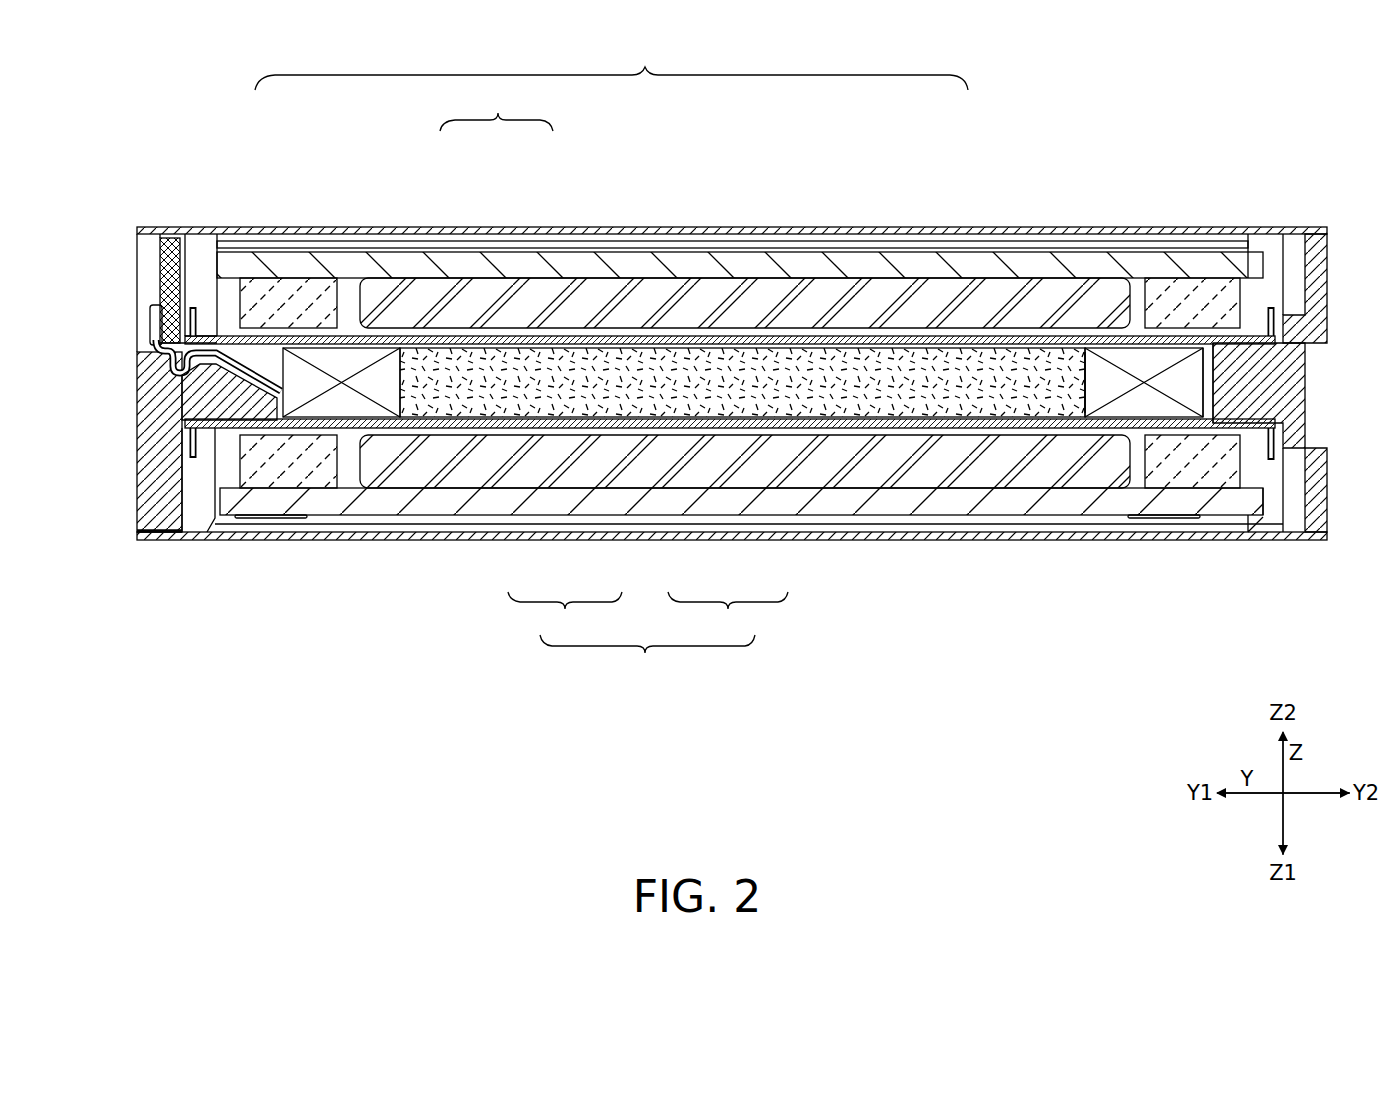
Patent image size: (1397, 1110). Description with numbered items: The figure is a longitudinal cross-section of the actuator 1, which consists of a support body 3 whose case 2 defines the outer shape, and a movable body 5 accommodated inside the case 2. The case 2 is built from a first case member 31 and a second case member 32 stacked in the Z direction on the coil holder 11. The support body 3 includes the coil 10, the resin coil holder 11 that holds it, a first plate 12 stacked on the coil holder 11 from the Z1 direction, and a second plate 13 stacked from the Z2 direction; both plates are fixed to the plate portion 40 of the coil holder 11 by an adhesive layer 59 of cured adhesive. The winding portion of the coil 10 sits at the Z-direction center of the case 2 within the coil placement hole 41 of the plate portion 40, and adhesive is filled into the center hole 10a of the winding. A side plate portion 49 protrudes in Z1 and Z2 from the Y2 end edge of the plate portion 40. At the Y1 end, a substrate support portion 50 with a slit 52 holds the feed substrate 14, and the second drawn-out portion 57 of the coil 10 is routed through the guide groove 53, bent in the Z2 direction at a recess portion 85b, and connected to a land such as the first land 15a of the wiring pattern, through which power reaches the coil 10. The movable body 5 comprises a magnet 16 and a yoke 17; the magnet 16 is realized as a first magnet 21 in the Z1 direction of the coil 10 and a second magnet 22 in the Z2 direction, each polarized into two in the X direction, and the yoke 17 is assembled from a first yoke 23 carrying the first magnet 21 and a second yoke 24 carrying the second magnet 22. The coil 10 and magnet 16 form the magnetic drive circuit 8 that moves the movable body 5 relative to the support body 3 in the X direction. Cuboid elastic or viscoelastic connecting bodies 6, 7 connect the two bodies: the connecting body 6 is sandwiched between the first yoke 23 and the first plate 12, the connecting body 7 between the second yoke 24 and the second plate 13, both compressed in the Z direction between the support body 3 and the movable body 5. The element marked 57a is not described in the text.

The actuator 1 is at (165, 98).
The case 2 is at (496, 108).
The support body 3 is at (611, 63).
The movable body 5 is at (647, 658).
The connecting body 6 is at (300, 470).
The connecting body 7 is at (320, 293).
The magnetic drive circuit 8 is at (376, 404).
The coil 10 is at (1118, 372).
The center hole 10a is at (1068, 393).
The coil holder 11 is at (1222, 332).
The first plate 12 is at (640, 419).
The second plate 13 is at (708, 338).
The feed substrate 14 is at (183, 243).
The first land 15a is at (153, 305).
The magnet 16 is at (728, 614).
The yoke 17 is at (565, 614).
The first magnet 21 is at (675, 470).
The second magnet 22 is at (752, 455).
The first yoke 23 is at (545, 500).
The second yoke 24 is at (603, 265).
The first case member 31 is at (470, 545).
The second case member 32 is at (432, 232).
The plate portion 40 is at (1250, 393).
The coil placement hole 41 is at (1190, 397).
The side plate portion 49 is at (1320, 263).
The substrate support portion 50 is at (124, 329).
The slit 52 is at (165, 240).
The guide groove 53 is at (262, 367).
The second drawn-out portion 57 is at (155, 347).
The conductor bend 57a is at (178, 372).
The adhesive layer 59 is at (742, 382).
The recess portion 85b is at (218, 237).